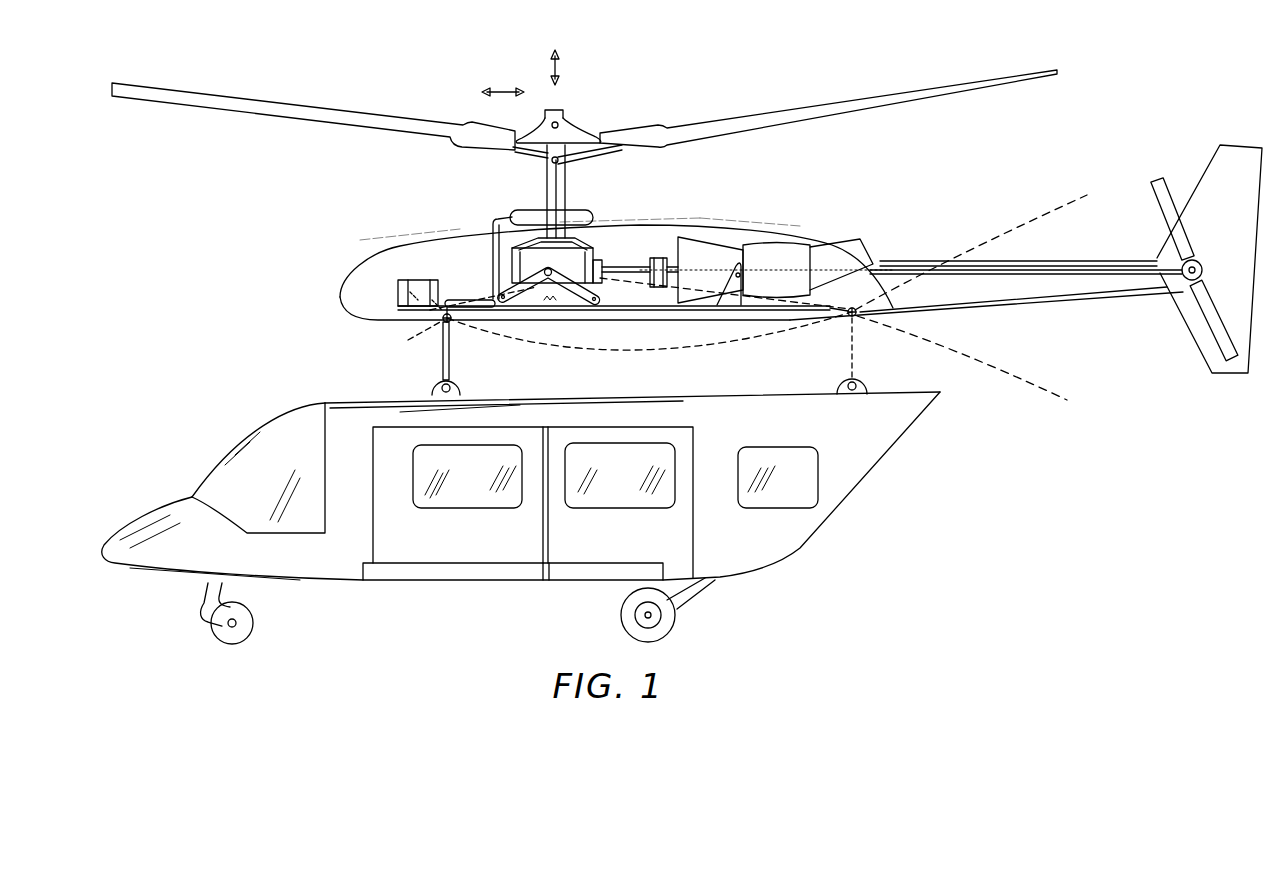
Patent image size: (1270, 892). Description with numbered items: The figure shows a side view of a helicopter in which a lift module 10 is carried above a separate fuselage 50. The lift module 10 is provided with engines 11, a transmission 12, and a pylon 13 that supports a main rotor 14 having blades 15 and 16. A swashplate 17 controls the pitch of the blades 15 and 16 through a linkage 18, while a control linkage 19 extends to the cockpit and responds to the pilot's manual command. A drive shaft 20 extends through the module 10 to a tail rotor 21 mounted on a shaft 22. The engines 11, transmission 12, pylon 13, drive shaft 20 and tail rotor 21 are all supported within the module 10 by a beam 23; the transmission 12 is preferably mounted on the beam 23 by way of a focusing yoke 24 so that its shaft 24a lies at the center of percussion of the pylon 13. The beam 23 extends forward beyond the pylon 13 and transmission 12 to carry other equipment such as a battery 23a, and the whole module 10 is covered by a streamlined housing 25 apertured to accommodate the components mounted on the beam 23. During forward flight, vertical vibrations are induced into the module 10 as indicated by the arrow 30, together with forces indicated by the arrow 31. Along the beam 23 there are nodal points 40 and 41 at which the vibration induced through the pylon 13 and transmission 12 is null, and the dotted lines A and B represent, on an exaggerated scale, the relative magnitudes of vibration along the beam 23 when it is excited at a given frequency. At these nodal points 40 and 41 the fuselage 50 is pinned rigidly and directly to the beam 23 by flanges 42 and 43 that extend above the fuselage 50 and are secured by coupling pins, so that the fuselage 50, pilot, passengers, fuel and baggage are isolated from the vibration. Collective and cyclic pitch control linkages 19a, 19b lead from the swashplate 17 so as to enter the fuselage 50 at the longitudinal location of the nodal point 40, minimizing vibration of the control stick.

The lift module 10 is at (612, 236).
The engines 11 is at (779, 256).
The transmission 12 is at (580, 240).
The pylon 13 is at (545, 173).
The main rotor 14 is at (588, 124).
The blade 15 is at (857, 98).
The blade 16 is at (295, 105).
The swashplate 17 is at (527, 210).
The linkage 18 is at (567, 187).
The control linkage 19 is at (492, 225).
The collective and cyclic pitch control linkage 19a is at (463, 299).
The collective and cyclic pitch control linkage 19b is at (441, 363).
The drive shaft 20 is at (1072, 271).
The tail rotor 21 is at (1165, 213).
The shaft 22 is at (1202, 270).
The beam 23 is at (683, 322).
The battery 23a is at (398, 288).
The focusing yoke 24 is at (595, 275).
The shaft 24a is at (550, 277).
The streamlined housing 25 is at (380, 257).
The arrow 30 is at (560, 66).
The arrow 31 is at (500, 90).
The nodal point 40 is at (451, 325).
The nodal point 41 is at (844, 320).
The flange 42 is at (461, 388).
The flange 43 is at (868, 382).
The fuselage 50 is at (332, 400).
The dotted line A is at (1012, 238).
The dotted line B is at (1033, 382).